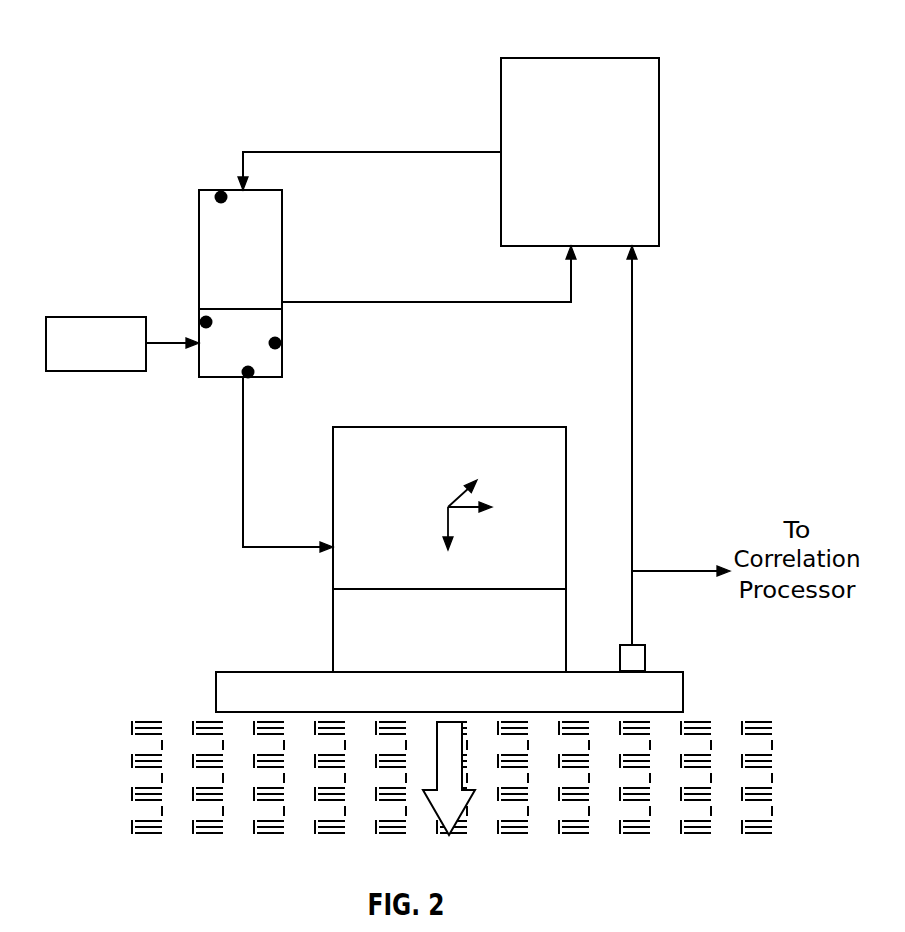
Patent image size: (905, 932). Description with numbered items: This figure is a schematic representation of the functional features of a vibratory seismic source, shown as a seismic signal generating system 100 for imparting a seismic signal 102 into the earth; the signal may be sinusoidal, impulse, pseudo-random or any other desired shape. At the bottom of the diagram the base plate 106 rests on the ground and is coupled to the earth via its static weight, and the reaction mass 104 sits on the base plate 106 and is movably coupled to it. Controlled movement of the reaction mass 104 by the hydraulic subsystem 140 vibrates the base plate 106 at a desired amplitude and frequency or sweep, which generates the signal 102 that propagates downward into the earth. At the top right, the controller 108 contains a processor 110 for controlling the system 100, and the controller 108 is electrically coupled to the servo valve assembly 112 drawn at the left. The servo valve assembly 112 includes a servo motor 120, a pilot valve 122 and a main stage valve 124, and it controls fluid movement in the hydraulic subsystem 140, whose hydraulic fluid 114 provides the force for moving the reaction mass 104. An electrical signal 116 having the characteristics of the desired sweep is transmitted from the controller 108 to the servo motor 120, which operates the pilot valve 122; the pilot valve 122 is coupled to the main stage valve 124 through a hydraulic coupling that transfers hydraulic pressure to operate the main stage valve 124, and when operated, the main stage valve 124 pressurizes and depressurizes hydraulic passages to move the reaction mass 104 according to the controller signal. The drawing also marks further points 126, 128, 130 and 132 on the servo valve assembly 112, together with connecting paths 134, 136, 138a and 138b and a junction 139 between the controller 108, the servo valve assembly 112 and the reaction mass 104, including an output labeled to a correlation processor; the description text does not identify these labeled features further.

The seismic signal generating system 100 is at (248, 68).
The seismic signal 102 is at (462, 778).
The reaction mass 104 is at (448, 427).
The base plate 106 is at (240, 672).
The controller 108 is at (598, 58).
The processor 110 is at (659, 148).
The servo valve assembly 112 is at (199, 222).
The hydraulic fluid 114 is at (234, 460).
The electrical signal 116 is at (270, 152).
The servo motor 120 is at (282, 248).
The pilot valve 122 is at (199, 277).
The main stage valve 124 is at (282, 288).
The input node 126 is at (200, 318).
The output node 128 is at (282, 353).
The control input node 130 is at (212, 189).
The signal output node 132 is at (250, 380).
The feedback signal line 134 is at (521, 325).
The controller output line 136 is at (395, 152).
The sensor signal line 138a is at (632, 375).
The output to correlation processor 138b is at (660, 571).
The junction 139 is at (301, 153).
The hydraulic pump subsystem 140 is at (90, 317).